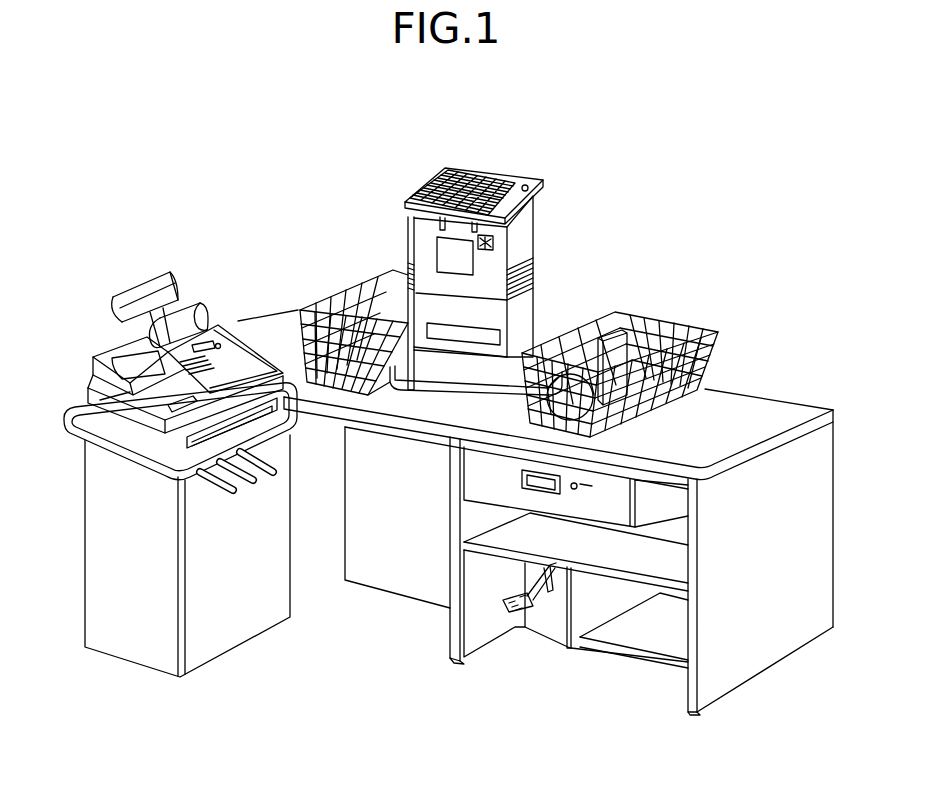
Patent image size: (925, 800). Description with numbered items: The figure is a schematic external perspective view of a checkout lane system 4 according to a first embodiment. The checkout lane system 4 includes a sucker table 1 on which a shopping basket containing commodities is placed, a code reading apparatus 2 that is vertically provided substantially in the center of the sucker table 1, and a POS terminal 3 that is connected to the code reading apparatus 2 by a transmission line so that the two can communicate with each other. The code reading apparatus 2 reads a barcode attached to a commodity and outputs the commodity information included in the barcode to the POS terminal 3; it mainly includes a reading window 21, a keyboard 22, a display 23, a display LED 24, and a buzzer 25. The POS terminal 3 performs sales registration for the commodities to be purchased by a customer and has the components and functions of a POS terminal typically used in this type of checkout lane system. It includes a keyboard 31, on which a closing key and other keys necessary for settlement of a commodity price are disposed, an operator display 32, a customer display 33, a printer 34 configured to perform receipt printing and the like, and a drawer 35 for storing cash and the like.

The sucker table 1 is at (823, 445).
The code reading apparatus 2 is at (485, 255).
The POS terminal 3 is at (165, 438).
The checkout lane system 4 is at (686, 142).
The reading window 21 is at (438, 246).
The keyboard 22 is at (468, 170).
The display 23 is at (547, 210).
The display LED 24 is at (527, 185).
The buzzer 25 is at (493, 243).
The keyboard 31 is at (240, 358).
The operator display 32 is at (198, 308).
The customer display 33 is at (160, 270).
The printer 34 is at (150, 388).
The drawer 35 is at (200, 440).